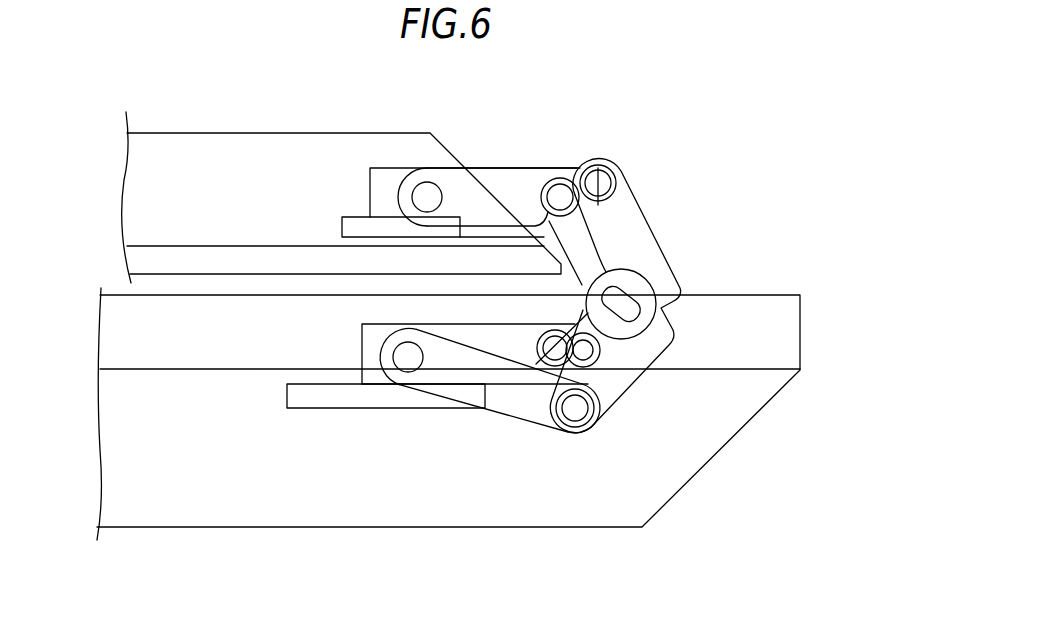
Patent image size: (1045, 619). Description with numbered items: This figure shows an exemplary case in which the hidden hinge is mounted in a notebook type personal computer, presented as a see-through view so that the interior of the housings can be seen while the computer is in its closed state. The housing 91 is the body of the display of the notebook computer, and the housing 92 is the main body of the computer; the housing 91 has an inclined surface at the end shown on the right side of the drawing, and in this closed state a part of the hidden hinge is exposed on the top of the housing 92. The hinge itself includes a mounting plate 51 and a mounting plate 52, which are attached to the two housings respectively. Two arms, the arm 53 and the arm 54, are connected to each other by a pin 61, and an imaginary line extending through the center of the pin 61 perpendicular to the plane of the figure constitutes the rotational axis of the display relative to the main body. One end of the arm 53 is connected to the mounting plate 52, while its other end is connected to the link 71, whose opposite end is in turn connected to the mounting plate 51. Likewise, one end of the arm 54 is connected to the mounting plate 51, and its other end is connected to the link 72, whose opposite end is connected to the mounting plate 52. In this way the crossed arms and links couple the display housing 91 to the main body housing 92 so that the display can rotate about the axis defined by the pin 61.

The housing 91 is at (192, 146).
The housing 92 is at (190, 512).
The mounting plate 51 is at (388, 167).
The mounting plate 52 is at (362, 349).
The arm 53 is at (628, 225).
The arm 54 is at (513, 187).
The pin 61 is at (633, 287).
The link 71 is at (625, 172).
The link 72 is at (575, 433).